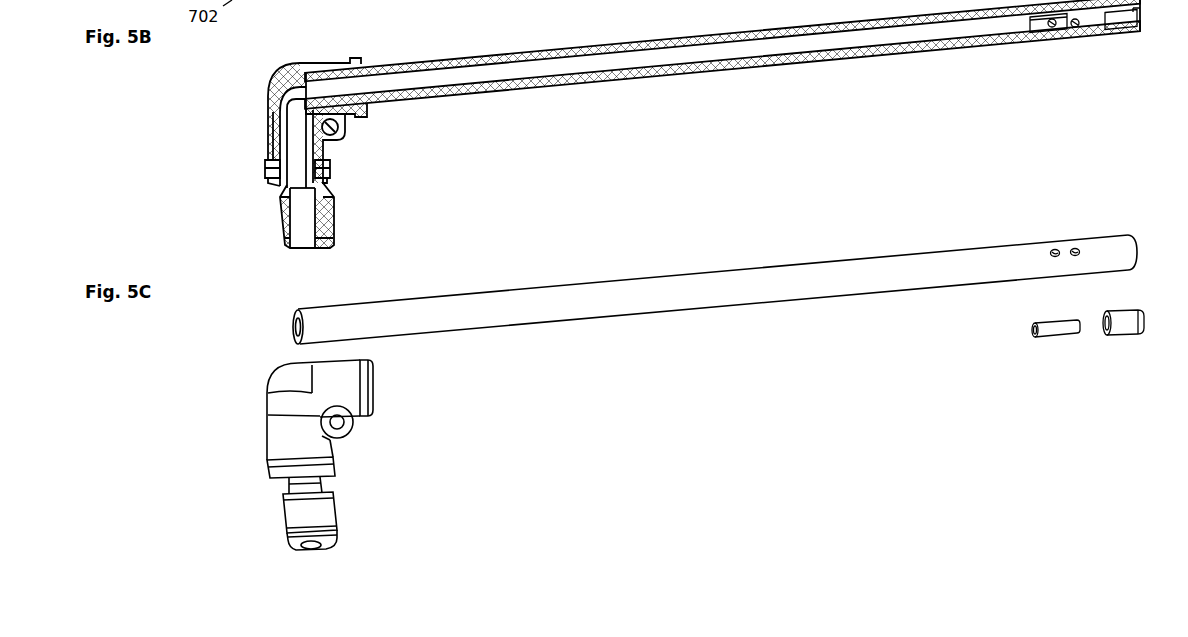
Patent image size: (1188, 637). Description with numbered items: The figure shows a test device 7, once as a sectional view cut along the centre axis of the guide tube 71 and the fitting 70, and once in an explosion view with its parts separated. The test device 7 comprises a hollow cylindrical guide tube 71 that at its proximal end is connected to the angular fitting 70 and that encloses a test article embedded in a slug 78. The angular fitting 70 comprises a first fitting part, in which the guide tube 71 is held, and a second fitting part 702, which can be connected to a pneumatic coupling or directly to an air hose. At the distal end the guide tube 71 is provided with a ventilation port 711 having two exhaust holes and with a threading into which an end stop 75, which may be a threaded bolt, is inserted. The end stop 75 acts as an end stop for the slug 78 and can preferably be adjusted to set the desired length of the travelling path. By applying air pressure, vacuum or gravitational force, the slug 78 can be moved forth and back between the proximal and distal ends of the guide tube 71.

In FIG. 5B, the test device 7 is at (215, 118).
In FIG. 5C, the test device 7 is at (215, 378).
In FIG. 5B, the fitting 70 is at (277, 140).
In FIG. 5C, the fitting 70 is at (282, 428).
In FIG. 5B, the second fitting part 702 is at (298, 207).
In FIG. 5C, the second fitting part 702 is at (251, 517).
In FIG. 5B, the guide tube 71 is at (760, 60).
In FIG. 5C, the guide tube 71 is at (760, 292).
In FIG. 5B, the ventilation port 711 is at (1075, 22).
In FIG. 5C, the ventilation port 711 is at (1072, 246).
In FIG. 5B, the end stop 75 is at (1120, 15).
In FIG. 5C, the end stop 75 is at (1131, 325).
In FIG. 5B, the slug 78 is at (1042, 20).
In FIG. 5C, the slug 78 is at (1055, 333).